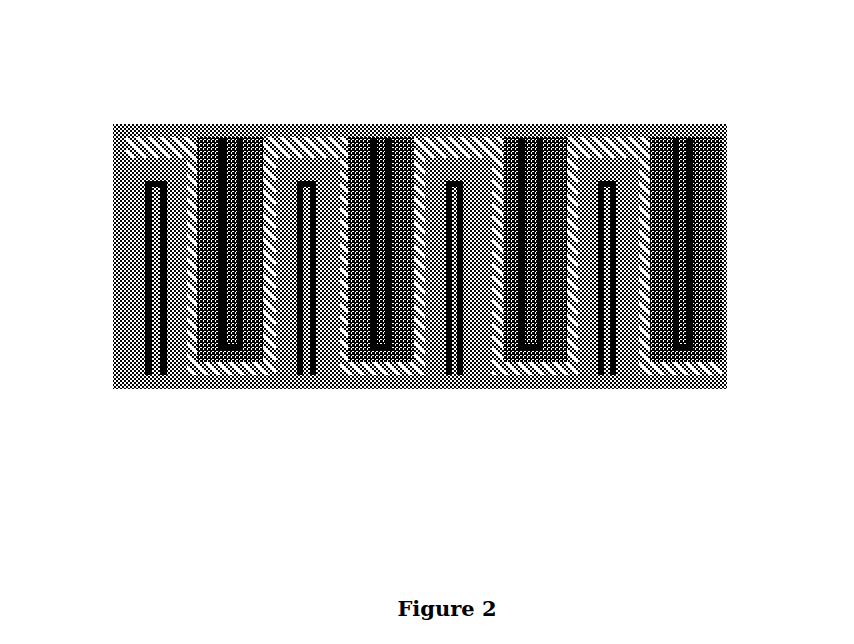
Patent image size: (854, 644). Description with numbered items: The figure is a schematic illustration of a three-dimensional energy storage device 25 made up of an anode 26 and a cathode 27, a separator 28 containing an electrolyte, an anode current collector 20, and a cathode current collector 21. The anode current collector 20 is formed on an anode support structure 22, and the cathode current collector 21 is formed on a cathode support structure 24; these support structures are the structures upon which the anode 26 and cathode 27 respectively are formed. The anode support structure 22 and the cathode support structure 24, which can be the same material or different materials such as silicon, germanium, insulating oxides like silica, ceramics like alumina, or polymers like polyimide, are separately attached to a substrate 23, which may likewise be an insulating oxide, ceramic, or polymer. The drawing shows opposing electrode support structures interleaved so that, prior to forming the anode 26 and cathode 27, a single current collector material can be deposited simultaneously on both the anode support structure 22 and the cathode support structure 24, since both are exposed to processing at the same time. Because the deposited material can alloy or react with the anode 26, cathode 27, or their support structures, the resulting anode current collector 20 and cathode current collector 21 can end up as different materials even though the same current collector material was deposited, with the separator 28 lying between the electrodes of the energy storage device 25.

The anode current collector 20 is at (720, 158).
The cathode current collector 21 is at (138, 283).
The anode support structure 22 is at (232, 138).
The substrate 23 is at (413, 128).
The cathode support structure 24 is at (162, 373).
The three-dimensional energy storage device 25 is at (408, 463).
The anode 26 is at (717, 323).
The cathode 27 is at (140, 172).
The separator 28 is at (604, 150).